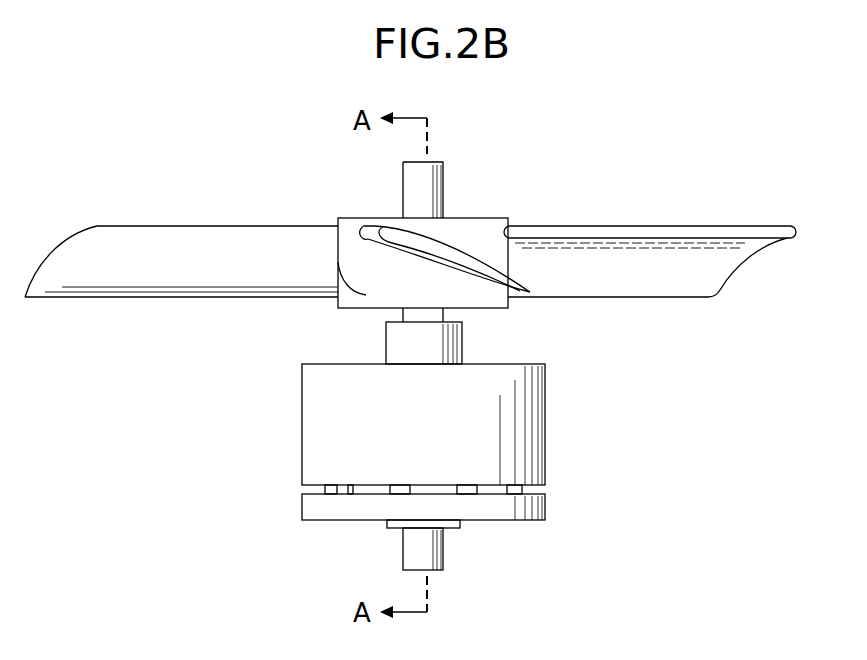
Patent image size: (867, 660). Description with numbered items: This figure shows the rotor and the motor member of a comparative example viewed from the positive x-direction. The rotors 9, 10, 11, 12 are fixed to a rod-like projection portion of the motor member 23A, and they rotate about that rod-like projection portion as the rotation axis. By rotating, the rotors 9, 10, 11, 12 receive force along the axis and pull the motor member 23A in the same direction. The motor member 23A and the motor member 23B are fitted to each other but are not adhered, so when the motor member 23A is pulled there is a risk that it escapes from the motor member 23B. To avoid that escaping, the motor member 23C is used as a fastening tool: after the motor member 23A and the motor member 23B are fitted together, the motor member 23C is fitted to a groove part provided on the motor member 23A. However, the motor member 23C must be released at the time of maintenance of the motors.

The rotor 9 is at (410, 200).
The rotor 10 is at (410, 200).
The rotor 11 is at (410, 200).
The rotor 12 is at (213, 243).
The motor member 23A is at (502, 382).
The motor member 23B is at (320, 505).
The motor member 23C is at (397, 528).